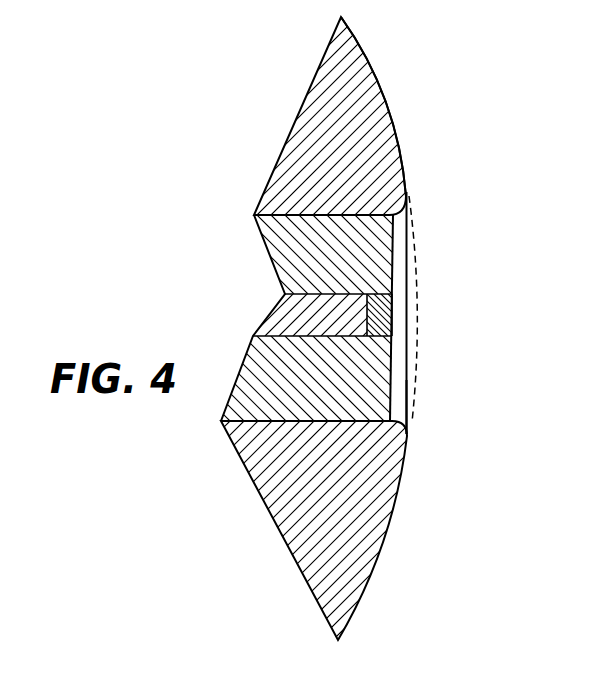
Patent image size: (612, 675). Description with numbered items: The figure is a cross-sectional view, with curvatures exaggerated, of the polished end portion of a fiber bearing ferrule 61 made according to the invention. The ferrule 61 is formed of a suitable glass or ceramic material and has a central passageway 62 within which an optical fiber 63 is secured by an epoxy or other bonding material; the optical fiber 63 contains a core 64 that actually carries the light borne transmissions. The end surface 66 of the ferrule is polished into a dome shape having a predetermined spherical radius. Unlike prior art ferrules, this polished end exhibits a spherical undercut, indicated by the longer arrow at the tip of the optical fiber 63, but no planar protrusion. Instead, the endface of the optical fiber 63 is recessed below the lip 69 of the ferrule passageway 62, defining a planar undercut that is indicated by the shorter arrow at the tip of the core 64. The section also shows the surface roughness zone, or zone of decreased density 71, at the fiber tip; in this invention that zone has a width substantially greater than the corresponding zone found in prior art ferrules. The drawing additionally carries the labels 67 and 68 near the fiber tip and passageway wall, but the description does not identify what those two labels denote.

The fiber bearing ferrule 61 is at (372, 110).
The end surface of the ferrule 66 is at (402, 152).
The central passageway 62 is at (387, 227).
The core 64 is at (350, 297).
The insert block 67 is at (396, 303).
The original surface contour (thickness) 68 is at (394, 311).
The zone of decreased density 71 is at (393, 327).
The optical fiber 63 is at (392, 389).
The lip of the ferrule passageway 69 is at (410, 416).